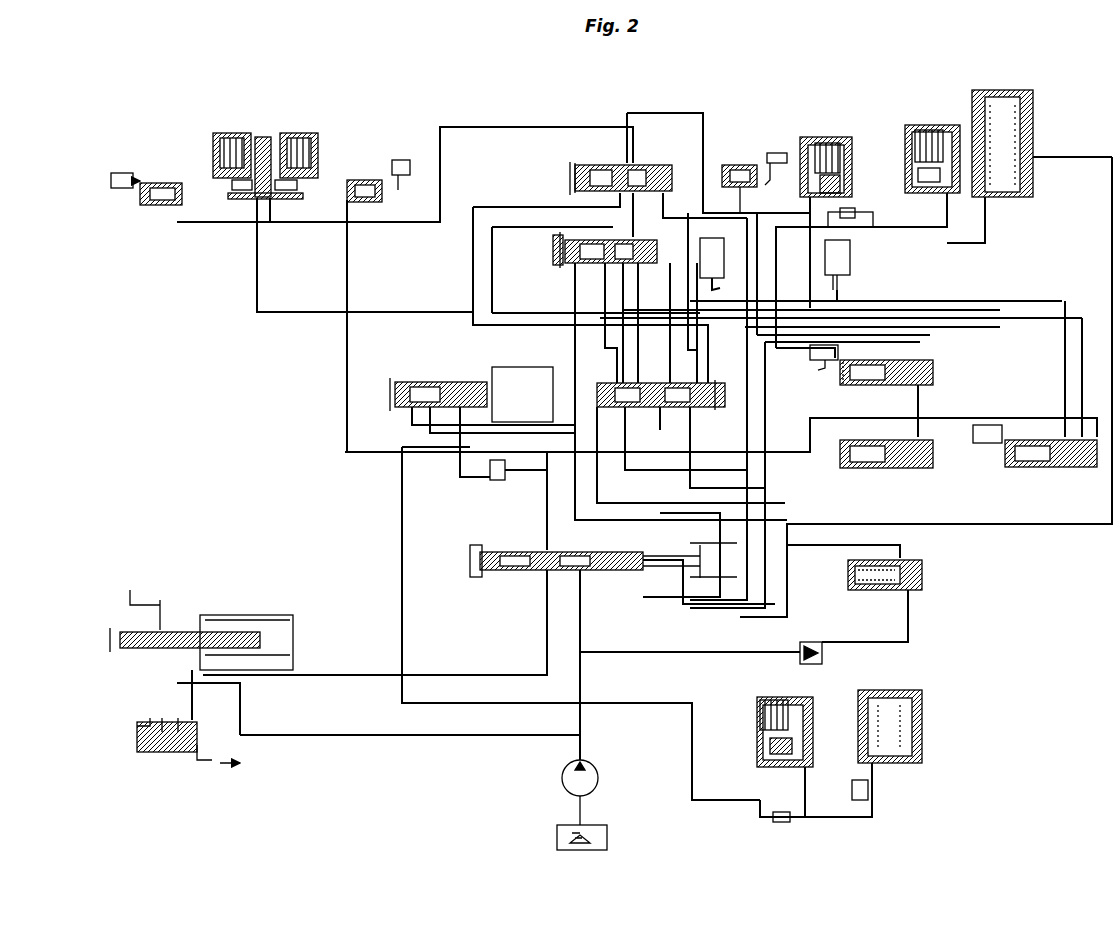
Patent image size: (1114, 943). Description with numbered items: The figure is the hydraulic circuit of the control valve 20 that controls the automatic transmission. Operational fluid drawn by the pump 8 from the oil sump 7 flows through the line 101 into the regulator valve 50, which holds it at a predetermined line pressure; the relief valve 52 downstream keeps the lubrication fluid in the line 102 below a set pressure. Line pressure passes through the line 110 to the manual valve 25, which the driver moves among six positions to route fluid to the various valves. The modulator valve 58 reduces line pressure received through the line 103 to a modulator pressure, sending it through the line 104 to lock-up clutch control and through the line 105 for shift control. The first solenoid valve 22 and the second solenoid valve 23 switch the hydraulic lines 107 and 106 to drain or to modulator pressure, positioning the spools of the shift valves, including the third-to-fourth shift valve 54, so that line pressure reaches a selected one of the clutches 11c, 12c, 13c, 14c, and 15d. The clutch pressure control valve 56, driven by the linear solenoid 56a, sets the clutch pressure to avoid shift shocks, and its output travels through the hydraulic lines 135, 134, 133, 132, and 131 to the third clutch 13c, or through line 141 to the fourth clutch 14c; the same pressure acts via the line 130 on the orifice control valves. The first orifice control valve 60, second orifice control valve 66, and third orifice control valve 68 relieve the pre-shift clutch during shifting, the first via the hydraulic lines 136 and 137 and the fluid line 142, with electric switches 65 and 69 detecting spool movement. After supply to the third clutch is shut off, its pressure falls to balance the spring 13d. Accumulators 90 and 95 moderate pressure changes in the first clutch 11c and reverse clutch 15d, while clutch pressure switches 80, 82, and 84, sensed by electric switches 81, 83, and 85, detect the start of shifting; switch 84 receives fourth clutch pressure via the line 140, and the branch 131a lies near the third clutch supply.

The oil sump 7 is at (607, 842).
The pump 8 is at (598, 780).
The first clutch 11c is at (925, 125).
The second clutch 12c is at (225, 135).
The third clutch 13c is at (830, 137).
The spring 13d is at (840, 185).
The fourth clutch 14c is at (300, 135).
The reverse clutch 15d is at (805, 705).
The control valve 20 is at (190, 440).
The first solenoid valve 22 is at (656, 243).
The second solenoid valve 23 is at (850, 262).
The manual valve 25 is at (525, 545).
The regulator valve 50 is at (705, 410).
The relief valve 52 is at (562, 268).
The 3-4 shift valve 54 is at (572, 158).
The clutch pressure control valve 56 is at (472, 378).
The linear solenoid 56a is at (523, 372).
The modulator valve 58 is at (925, 568).
The first orifice control valve 60 is at (1035, 470).
The electric switch 65 is at (988, 443).
The second orifice control valve 66 is at (915, 470).
The third orifice control valve 68 is at (940, 372).
The electric switch 69 is at (825, 368).
The clutch pressure switch 80 is at (157, 207).
The electric switch 81 is at (120, 173).
The clutch pressure switch 82 is at (742, 162).
The electric switch 83 is at (775, 153).
The clutch pressure switch 84 is at (364, 178).
The electric switch 85 is at (398, 160).
The accumulator 90 is at (1035, 128).
The accumulator 95 is at (925, 722).
The line 101 is at (380, 740).
The line 102 is at (203, 762).
The line 103 is at (655, 655).
The line 104 is at (683, 610).
The line 105 is at (790, 512).
The hydraulic line 106 is at (852, 307).
The hydraulic line 107 is at (703, 297).
The line 110 is at (583, 641).
The line 130 is at (810, 280).
The hydraulic line 131 is at (675, 113).
The line 131a is at (738, 204).
The hydraulic line 132 is at (627, 203).
The hydraulic line 133 is at (617, 317).
The hydraulic line 134 is at (662, 425).
The hydraulic line 135 is at (420, 490).
The hydraulic line 136 is at (473, 272).
The hydraulic line 137 is at (1065, 388).
The line 140 is at (347, 218).
The hydraulic line 141 is at (410, 224).
The fluid line 142 is at (347, 390).